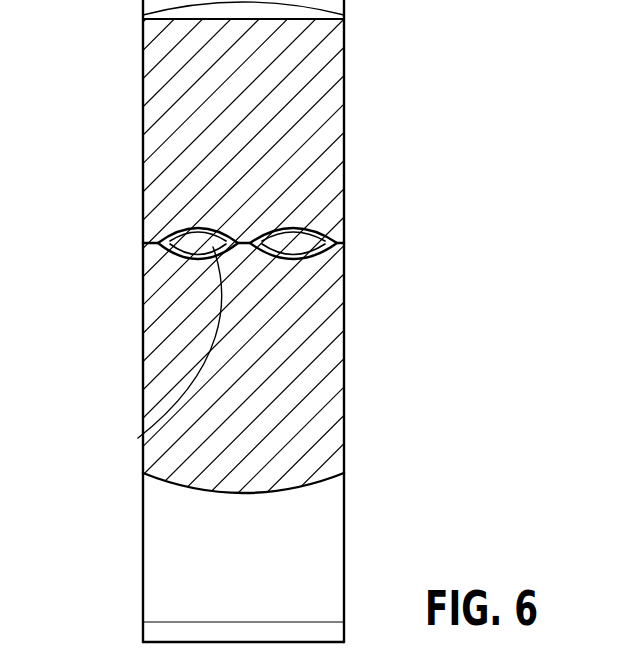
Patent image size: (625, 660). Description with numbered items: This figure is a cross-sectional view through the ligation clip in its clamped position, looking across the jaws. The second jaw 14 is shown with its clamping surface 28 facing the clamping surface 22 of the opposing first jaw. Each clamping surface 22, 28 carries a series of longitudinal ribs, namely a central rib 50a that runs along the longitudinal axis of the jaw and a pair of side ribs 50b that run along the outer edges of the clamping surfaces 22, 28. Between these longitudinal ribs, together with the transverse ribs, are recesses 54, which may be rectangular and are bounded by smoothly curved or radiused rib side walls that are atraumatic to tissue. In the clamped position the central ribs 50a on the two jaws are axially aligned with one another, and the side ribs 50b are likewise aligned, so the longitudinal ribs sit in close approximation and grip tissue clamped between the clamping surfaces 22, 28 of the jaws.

The second jaw 14 is at (355, 406).
The clamping surface 22 is at (240, 242).
The clamping surface 28 is at (168, 353).
The central rib 50a is at (247, 243).
The side ribs 50b is at (158, 243).
The recesses 54 is at (207, 259).